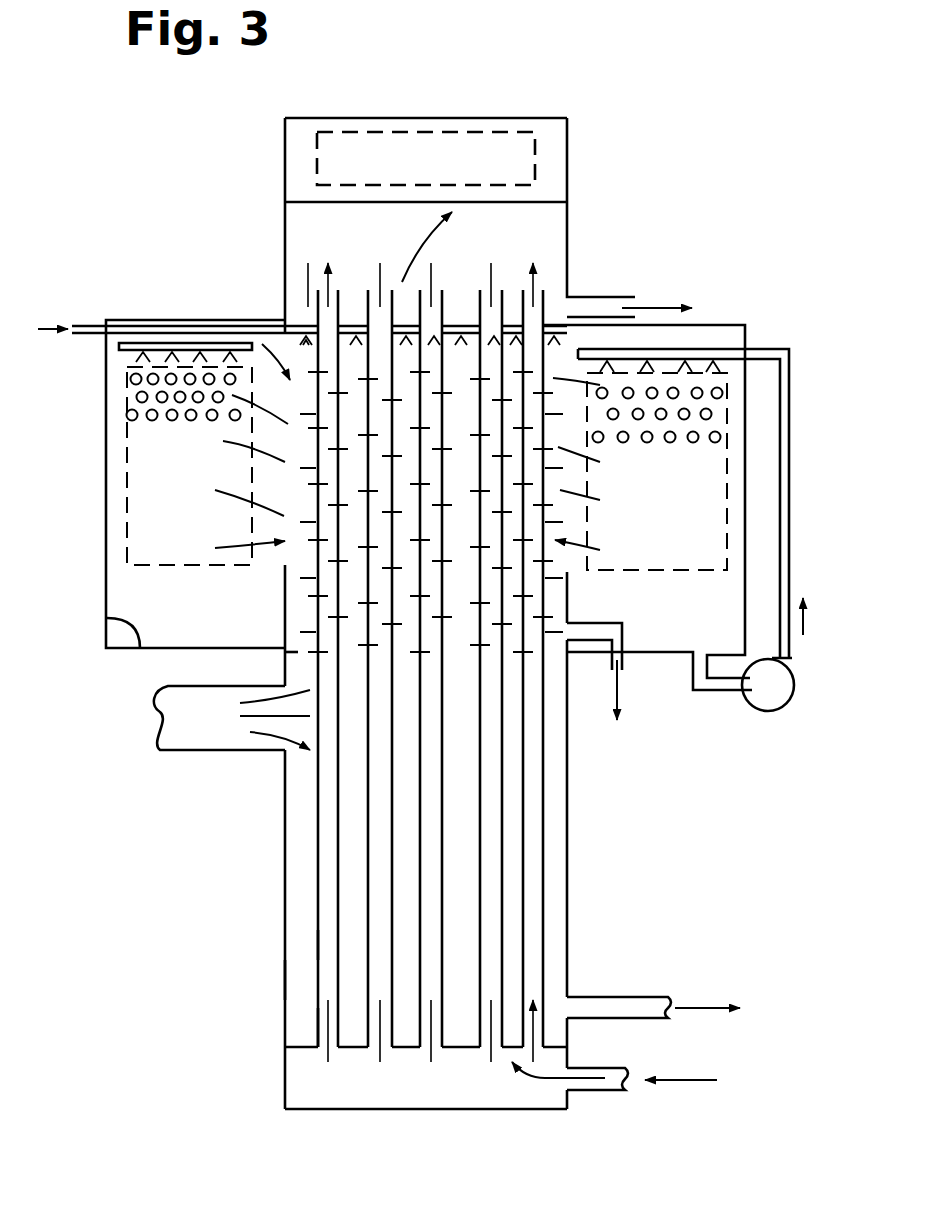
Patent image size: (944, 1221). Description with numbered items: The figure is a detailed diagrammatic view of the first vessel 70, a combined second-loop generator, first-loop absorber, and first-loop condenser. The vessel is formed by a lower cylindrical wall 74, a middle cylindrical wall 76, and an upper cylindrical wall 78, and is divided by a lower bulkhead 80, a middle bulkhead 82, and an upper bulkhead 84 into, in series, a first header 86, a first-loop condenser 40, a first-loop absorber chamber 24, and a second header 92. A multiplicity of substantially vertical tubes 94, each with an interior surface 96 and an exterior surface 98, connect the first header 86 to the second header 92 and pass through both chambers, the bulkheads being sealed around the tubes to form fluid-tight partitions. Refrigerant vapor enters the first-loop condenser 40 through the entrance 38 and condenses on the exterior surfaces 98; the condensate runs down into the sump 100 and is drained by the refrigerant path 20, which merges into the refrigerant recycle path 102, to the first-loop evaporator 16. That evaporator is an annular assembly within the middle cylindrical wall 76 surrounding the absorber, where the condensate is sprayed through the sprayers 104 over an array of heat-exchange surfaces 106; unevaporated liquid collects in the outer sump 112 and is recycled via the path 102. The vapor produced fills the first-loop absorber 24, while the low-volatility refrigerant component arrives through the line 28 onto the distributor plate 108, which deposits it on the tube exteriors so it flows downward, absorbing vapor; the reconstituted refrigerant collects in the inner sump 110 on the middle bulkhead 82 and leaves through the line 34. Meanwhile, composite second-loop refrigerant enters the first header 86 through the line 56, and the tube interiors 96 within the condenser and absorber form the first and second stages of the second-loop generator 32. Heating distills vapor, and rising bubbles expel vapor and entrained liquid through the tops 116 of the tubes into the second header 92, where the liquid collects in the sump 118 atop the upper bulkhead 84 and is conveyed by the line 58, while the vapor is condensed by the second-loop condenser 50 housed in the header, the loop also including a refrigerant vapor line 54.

The first-loop evaporator 16 is at (745, 490).
The refrigerant path 20 is at (630, 997).
The first-loop absorber chamber 24 is at (290, 350).
The line 28 is at (84, 326).
The second-loop generator 32 is at (378, 915).
The line 34 is at (622, 635).
The entrance 38 is at (215, 750).
The first-loop condenser 40 is at (300, 852).
The second-loop condenser 50 is at (358, 132).
The refrigerant vapor line 54 is at (240, 395).
The composite refrigerant line 56 is at (607, 1090).
The less-volatile refrigerant component line 58 is at (628, 297).
The first vessel 70 is at (570, 800).
The lower cylindrical wall 74 is at (292, 978).
The middle cylindrical wall 76 is at (106, 512).
The upper cylindrical wall 78 is at (567, 287).
The lower bulkhead 80 is at (300, 1047).
The middle bulkhead 82 is at (298, 655).
The upper bulkhead 84 is at (298, 325).
The first header 86 is at (302, 1085).
The second header 92 is at (555, 248).
The tubes 94 is at (318, 943).
The interior surface 96 is at (322, 1045).
The exterior surface 98 is at (320, 1010).
The sump 100 is at (565, 1033).
The refrigerant recycle path 102 is at (790, 558).
The sprayers 104 is at (745, 352).
The heat-exchange surfaces 106 is at (725, 440).
The distributor plate 108 is at (458, 327).
The inner sump 110 is at (285, 600).
The outer sump 112 is at (107, 618).
The tops 116 is at (338, 292).
The sump 118 is at (513, 327).